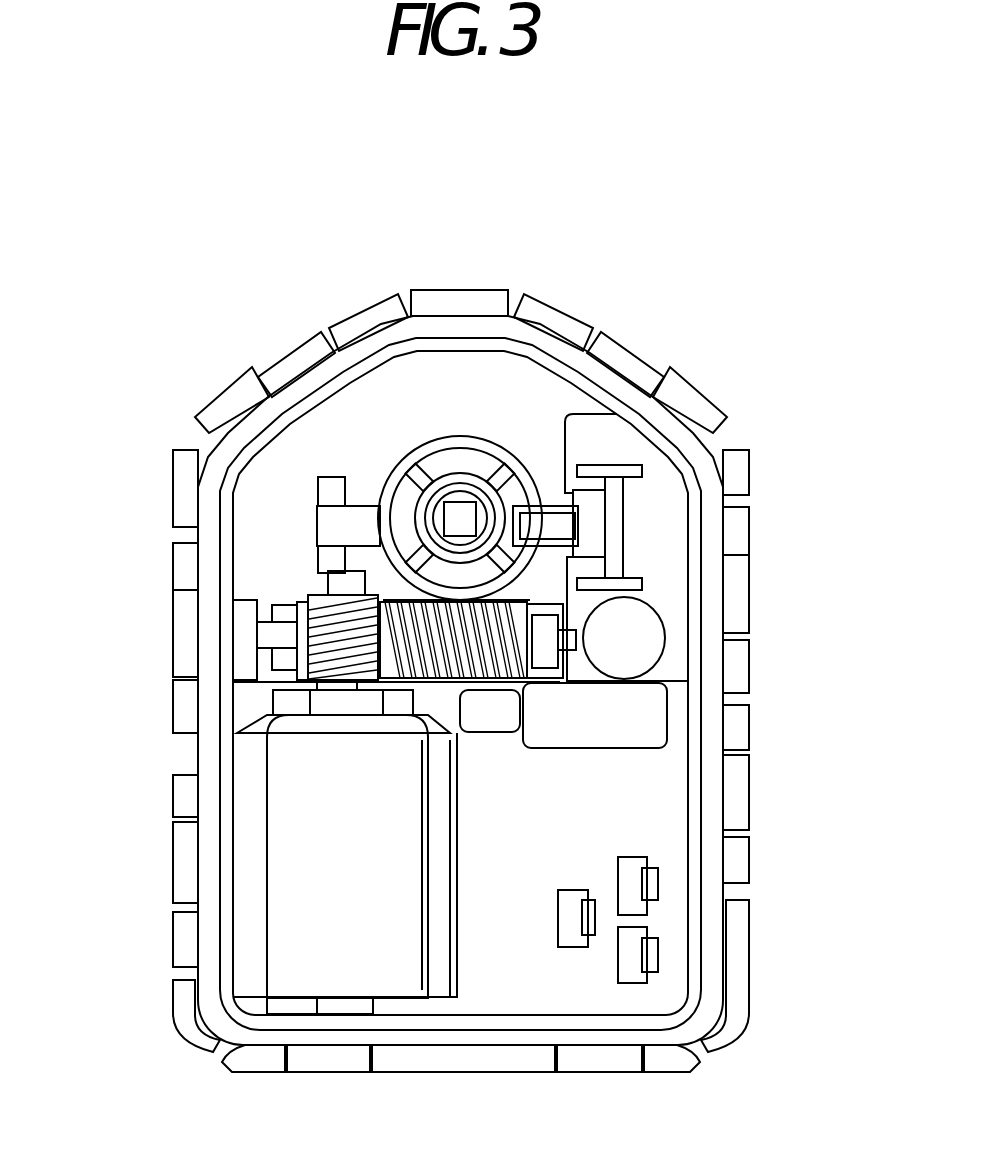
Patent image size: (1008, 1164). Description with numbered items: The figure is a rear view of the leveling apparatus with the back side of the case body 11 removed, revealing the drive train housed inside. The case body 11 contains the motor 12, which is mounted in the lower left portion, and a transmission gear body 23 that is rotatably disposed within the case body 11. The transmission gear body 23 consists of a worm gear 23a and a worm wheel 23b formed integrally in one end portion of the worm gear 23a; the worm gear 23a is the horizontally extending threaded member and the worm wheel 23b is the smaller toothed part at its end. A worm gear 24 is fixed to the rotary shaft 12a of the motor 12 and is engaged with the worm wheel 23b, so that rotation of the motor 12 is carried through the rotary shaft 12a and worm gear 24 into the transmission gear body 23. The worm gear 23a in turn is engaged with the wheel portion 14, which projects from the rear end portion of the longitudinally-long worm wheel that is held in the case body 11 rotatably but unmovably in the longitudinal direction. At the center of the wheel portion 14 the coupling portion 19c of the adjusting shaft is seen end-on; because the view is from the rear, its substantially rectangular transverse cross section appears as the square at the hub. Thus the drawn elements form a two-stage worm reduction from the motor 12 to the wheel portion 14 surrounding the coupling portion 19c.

The case body 11 is at (563, 308).
The motor 12 is at (287, 907).
The rotary shaft 12a is at (330, 684).
The wheel portion 14 is at (410, 453).
The coupling portion 19c is at (455, 508).
The transmission gear body 23 is at (490, 682).
The worm gear 23a is at (583, 638).
The worm wheel 23b is at (320, 584).
The worm gear 24 is at (300, 647).